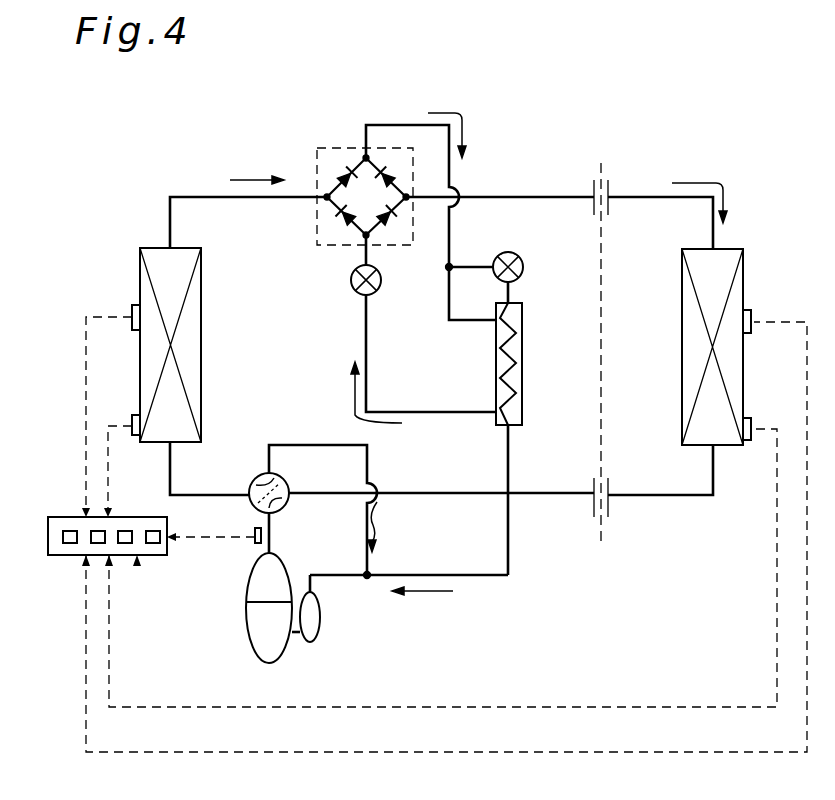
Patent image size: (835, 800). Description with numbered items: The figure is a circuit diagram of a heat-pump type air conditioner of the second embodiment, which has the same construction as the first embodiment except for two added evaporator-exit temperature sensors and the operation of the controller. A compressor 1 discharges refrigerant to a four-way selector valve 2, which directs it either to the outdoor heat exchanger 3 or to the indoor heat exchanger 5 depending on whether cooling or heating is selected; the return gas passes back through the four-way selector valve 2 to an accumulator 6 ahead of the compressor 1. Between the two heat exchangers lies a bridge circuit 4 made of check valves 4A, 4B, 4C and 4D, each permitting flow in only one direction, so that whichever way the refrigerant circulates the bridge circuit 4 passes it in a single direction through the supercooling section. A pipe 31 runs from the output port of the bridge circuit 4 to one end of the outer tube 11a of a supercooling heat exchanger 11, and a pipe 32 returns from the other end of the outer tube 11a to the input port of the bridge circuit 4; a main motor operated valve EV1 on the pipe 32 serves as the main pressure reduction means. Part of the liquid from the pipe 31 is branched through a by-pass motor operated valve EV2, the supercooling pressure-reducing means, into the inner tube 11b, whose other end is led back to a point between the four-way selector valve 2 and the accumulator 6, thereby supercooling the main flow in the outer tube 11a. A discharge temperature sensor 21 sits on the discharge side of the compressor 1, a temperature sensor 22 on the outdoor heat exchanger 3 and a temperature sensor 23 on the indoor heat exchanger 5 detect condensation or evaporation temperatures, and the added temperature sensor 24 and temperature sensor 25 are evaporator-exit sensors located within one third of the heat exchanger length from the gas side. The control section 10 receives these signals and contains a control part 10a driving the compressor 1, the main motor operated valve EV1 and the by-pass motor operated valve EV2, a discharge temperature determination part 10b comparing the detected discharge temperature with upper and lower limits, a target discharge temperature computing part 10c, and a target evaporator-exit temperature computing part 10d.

The compressor 1 is at (246, 632).
The four-way selector valve 2 is at (283, 507).
The outdoor heat exchanger 3 is at (140, 352).
The bridge circuit 4 is at (335, 196).
The check valve 4A is at (340, 172).
The check valve 4B is at (393, 165).
The check valve 4C is at (340, 220).
The check valve 4D is at (384, 222).
The indoor heat exchanger 5 is at (743, 352).
The accumulator 6 is at (320, 628).
The control section 10 is at (122, 574).
The control part 10a is at (68, 531).
The discharge temperature determination part 10b is at (102, 556).
The target discharge temperature computing part 10c is at (123, 556).
The target evaporator-exit temperature computing part 10d is at (155, 556).
The supercooling heat exchanger 11 is at (504, 366).
The outer tube 11a is at (497, 365).
The inner tube 11b is at (516, 360).
The discharge temperature sensor 21 is at (254, 548).
The temperature sensor 22 is at (132, 308).
The temperature sensor 23 is at (757, 316).
The temperature sensor 24 is at (132, 430).
The temperature sensor 25 is at (757, 440).
The pipe 31 is at (449, 170).
The pipe 32 is at (367, 360).
The main motor operated valve EV1 is at (380, 288).
The by-pass motor operated valve EV2 is at (540, 245).